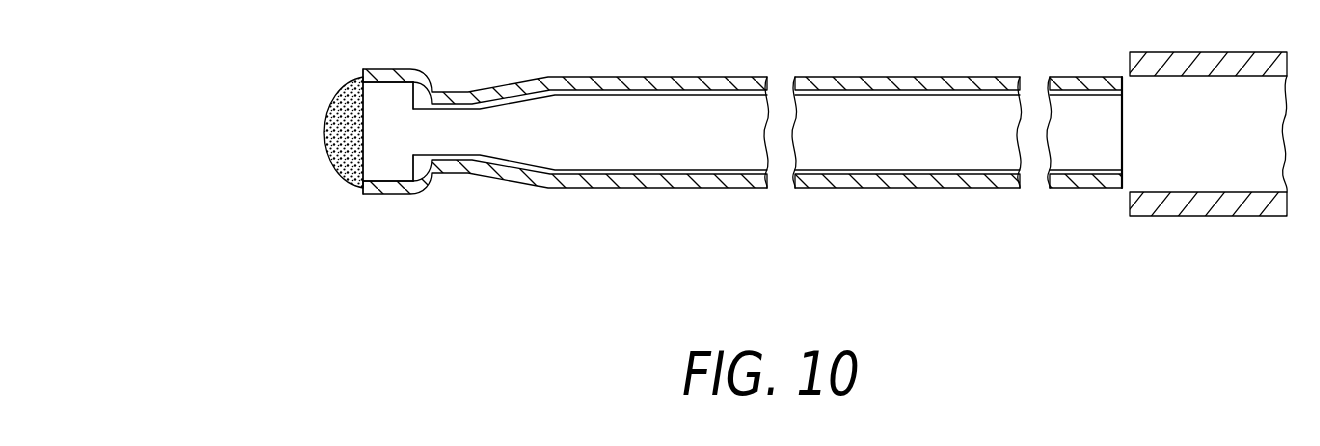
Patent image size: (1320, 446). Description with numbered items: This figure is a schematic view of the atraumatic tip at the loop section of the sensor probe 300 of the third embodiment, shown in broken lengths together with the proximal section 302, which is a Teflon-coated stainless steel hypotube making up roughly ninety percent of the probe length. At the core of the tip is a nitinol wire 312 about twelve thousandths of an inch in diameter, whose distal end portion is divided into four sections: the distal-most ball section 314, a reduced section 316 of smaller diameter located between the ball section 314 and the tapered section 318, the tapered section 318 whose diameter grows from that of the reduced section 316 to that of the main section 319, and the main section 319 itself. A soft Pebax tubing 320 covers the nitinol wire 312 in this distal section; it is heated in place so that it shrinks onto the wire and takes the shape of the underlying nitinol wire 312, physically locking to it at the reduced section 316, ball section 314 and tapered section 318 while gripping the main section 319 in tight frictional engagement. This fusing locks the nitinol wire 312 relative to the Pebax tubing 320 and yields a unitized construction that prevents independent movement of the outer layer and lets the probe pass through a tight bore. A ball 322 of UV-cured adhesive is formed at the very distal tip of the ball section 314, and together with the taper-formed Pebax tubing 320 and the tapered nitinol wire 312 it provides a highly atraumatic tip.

The sensor probe 300 is at (918, 206).
The proximal section 302 is at (1212, 229).
The nitinol wire 312 is at (566, 130).
The ball section 314 is at (376, 159).
The reduced section 316 is at (452, 133).
The tapered section 318 is at (515, 152).
The main section 319 is at (703, 155).
The Pebax tubing 320 is at (598, 83).
The ball 322 is at (345, 110).